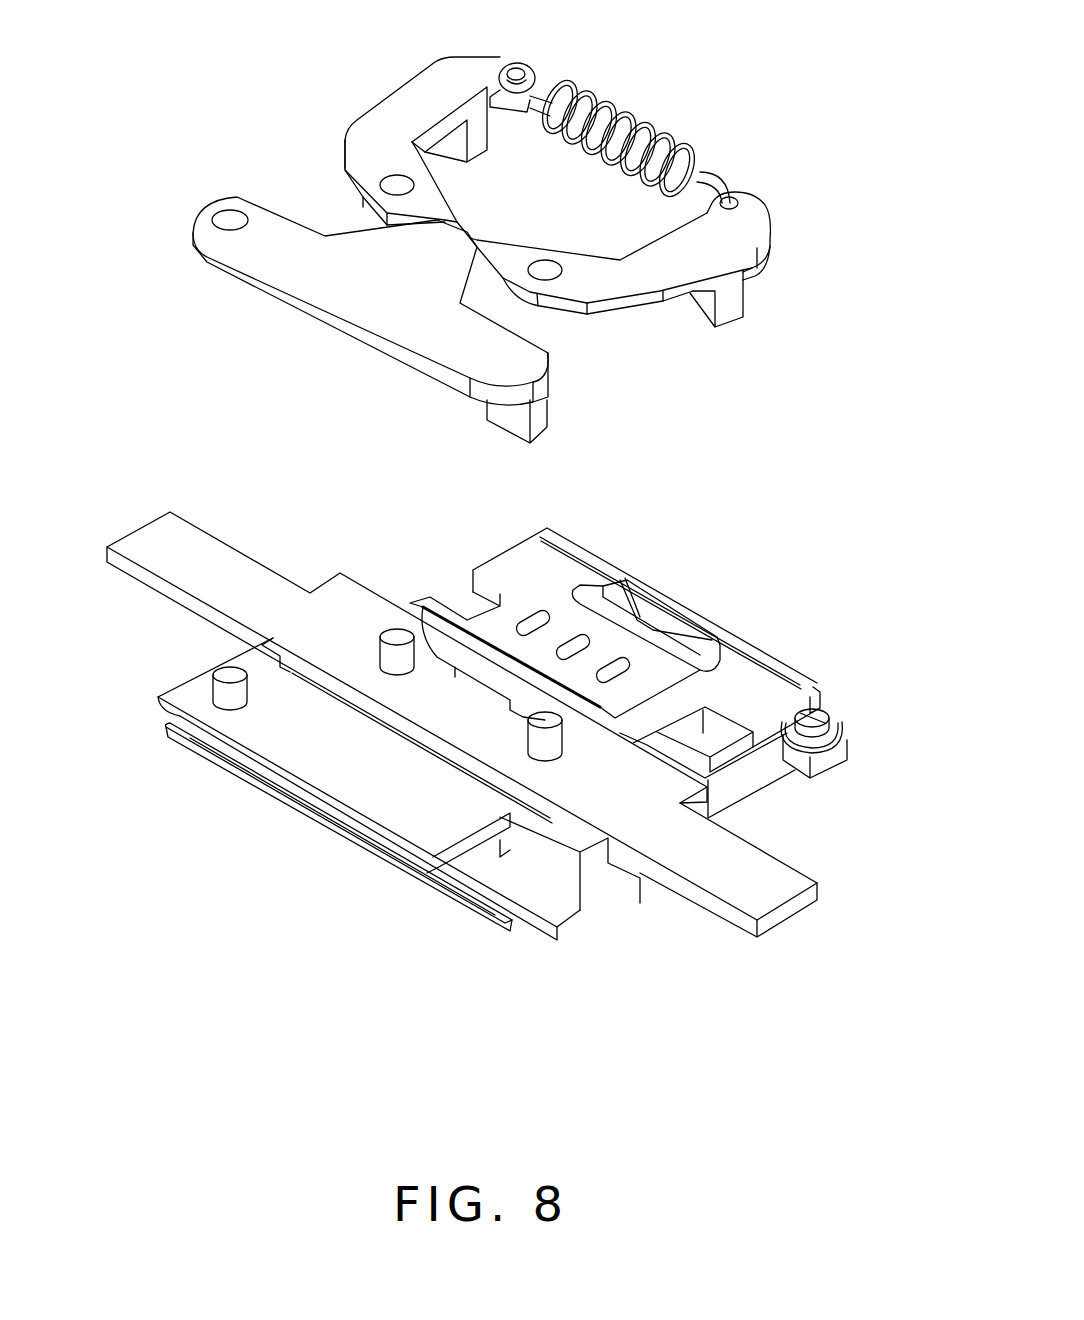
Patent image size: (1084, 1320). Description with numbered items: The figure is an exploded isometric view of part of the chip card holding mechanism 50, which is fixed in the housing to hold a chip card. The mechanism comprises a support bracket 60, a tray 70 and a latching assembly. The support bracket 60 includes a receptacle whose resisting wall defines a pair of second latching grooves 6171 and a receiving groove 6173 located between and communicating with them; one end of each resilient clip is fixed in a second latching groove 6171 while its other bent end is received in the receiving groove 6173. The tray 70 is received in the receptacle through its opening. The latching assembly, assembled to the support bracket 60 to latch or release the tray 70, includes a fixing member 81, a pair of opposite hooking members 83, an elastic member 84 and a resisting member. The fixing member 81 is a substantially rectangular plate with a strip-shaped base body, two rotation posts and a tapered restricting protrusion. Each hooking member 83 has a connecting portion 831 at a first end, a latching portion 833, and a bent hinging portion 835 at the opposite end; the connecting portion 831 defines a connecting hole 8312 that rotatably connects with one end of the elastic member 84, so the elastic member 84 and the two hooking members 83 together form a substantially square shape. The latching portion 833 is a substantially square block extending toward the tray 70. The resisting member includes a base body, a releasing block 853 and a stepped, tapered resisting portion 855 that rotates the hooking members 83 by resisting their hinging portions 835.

The chip card holding mechanism 50 is at (257, 80).
The hooking member 83 is at (468, 60).
The elastic member 84 is at (680, 157).
The connecting hole 8312 is at (745, 195).
The connecting portion 831 is at (745, 237).
The latching portion 833 is at (730, 303).
The hinging portion 835 is at (508, 257).
The resisting portion 855 is at (430, 243).
The releasing block 853 is at (503, 418).
The second latching groove 6171 is at (587, 563).
The receiving groove 6173 is at (662, 613).
The fixing member 81 is at (753, 875).
The tray 70 is at (383, 858).
The support bracket 60 is at (595, 888).